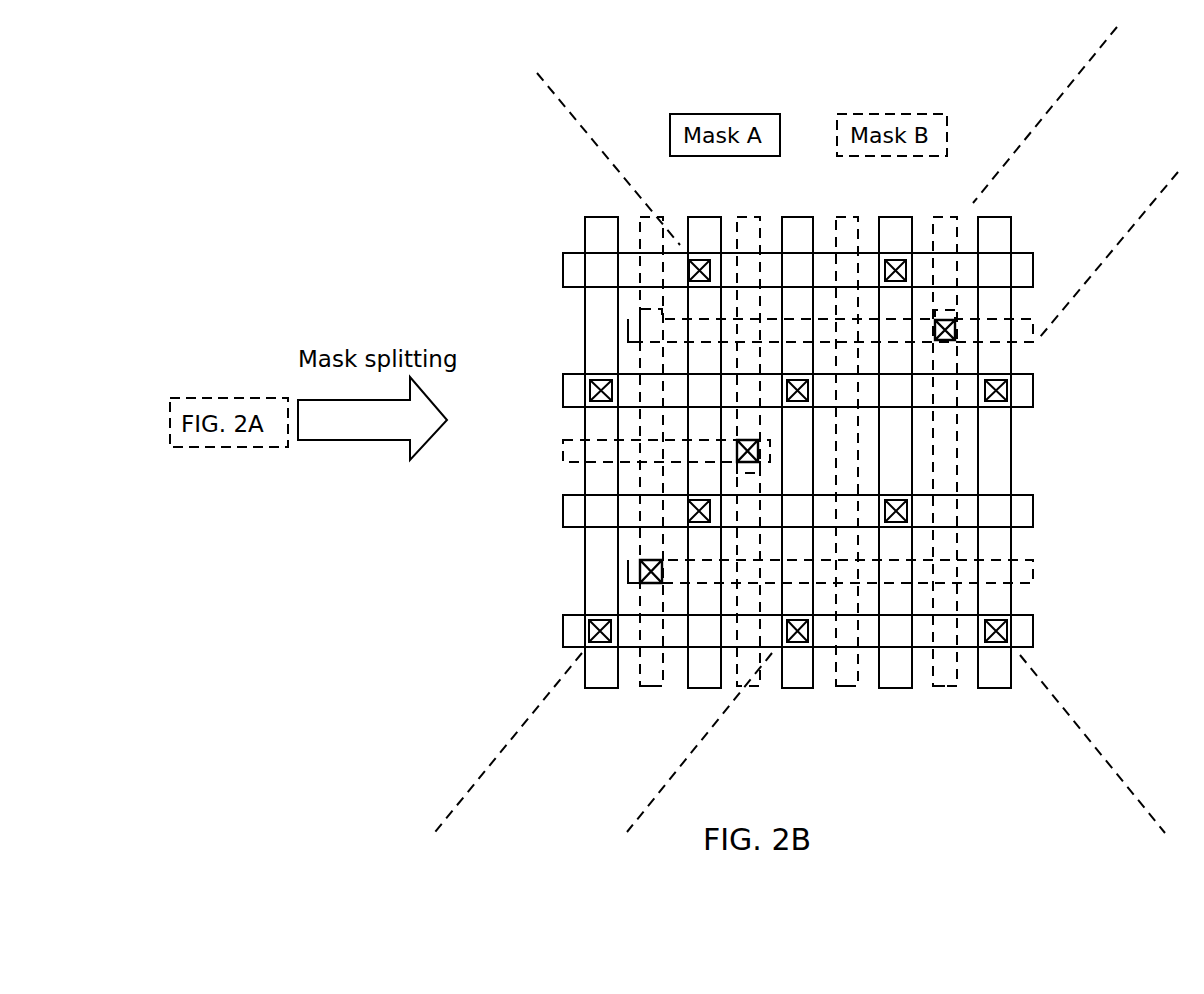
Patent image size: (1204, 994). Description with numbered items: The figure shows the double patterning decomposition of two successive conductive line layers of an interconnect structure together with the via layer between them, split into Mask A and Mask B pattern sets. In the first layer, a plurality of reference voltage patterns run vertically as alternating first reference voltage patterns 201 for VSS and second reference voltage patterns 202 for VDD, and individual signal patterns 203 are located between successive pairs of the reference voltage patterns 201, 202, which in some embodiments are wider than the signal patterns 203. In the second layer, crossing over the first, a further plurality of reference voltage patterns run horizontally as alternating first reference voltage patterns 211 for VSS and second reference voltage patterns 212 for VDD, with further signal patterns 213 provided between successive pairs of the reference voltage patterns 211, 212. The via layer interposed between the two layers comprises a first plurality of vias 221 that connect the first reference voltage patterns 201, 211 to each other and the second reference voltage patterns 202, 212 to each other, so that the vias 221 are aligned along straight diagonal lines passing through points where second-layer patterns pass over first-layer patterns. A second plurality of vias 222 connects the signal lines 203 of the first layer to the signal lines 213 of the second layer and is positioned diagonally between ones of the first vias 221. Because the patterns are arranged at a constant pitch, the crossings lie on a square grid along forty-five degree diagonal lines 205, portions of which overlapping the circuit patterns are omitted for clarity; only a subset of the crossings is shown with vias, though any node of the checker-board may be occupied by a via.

The first reference voltage pattern 201 is at (601, 217).
The second reference voltage pattern 202 is at (704, 217).
The signal pattern 203 is at (748, 217).
The diagonal line 205 is at (565, 103).
The first reference voltage pattern 211 is at (563, 392).
The second reference voltage pattern 212 is at (563, 272).
The signal pattern 213 is at (628, 330).
The first plurality of vias 221 is at (905, 508).
The second plurality of vias 222 is at (945, 322).